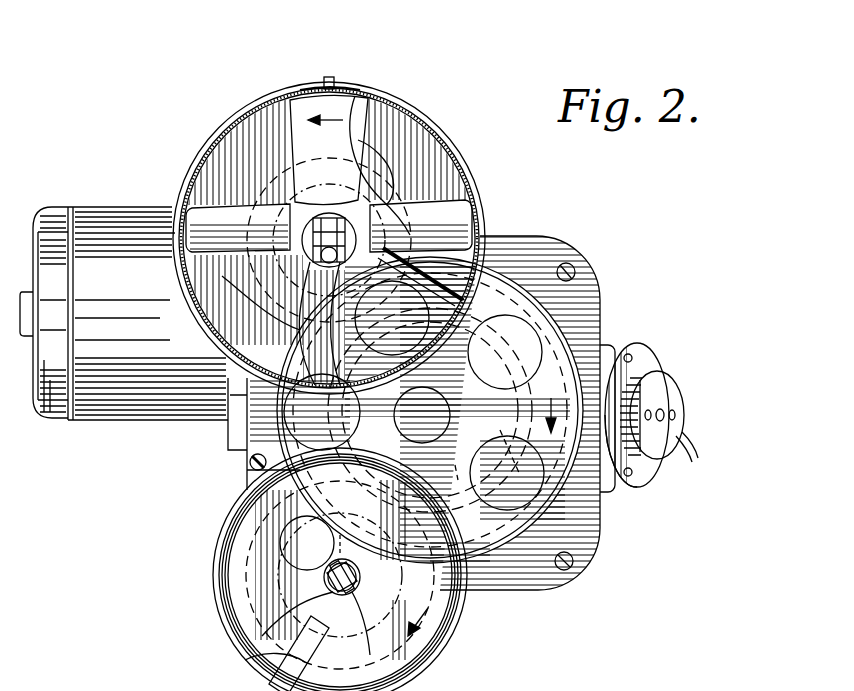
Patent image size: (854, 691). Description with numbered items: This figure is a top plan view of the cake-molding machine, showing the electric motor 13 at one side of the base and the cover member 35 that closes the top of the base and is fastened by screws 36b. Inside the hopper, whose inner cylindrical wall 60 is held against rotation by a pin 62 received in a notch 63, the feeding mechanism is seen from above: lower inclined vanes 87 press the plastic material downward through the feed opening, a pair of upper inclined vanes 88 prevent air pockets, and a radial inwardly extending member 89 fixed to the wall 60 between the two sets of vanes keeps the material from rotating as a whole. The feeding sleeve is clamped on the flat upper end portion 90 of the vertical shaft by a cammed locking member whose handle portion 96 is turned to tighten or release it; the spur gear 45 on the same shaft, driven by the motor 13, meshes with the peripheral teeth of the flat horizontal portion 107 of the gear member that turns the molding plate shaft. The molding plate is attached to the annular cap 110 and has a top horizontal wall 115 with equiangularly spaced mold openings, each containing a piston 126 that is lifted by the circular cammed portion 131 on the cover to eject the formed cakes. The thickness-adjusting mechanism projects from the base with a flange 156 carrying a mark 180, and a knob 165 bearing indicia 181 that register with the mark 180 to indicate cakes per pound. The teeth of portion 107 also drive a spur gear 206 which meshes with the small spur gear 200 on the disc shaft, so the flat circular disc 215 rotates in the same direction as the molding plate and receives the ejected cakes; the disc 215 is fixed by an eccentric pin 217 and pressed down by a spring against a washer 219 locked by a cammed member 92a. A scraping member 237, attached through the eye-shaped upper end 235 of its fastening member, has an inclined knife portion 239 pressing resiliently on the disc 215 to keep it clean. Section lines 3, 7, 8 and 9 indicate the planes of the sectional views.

The section line 3- 3 is at (188, 690).
The section line 7- 7 is at (272, 21).
The section line 8- 8 is at (520, 330).
The section line 9- 9 is at (367, 427).
The electric motor 13 is at (127, 196).
The cover member 35 is at (600, 548).
The screws 36b is at (574, 265).
The spur gear 45 is at (290, 192).
The inner cylindrical wall 60 is at (470, 170).
The pin 62 is at (336, 80).
The notch 63 is at (378, 86).
The inclined vanes 87 is at (385, 200).
The inclined vanes 88 is at (365, 108).
The radial inwardly extending member 89 is at (470, 262).
The flat upper end portion 90 is at (327, 218).
The handle portion 96 is at (305, 272).
The flat horizontal portion 107 is at (607, 347).
The annular cap 110 is at (440, 413).
The top horizontal wall 115 is at (545, 578).
The piston 126 is at (440, 270).
The circular cammed portion 131 is at (478, 455).
The flange 156 is at (650, 472).
The handle, knob, or dial portion 165 is at (661, 402).
The mark 180 is at (648, 395).
The indicia 181 is at (680, 455).
The small spur gear 200 is at (340, 535).
The spur gear 206 is at (283, 538).
The disc 215 is at (222, 566).
The eccentric pin 217 is at (300, 612).
The washer 219 is at (352, 585).
The upper end 235 is at (467, 608).
The scraping member 237 is at (324, 654).
The knife portion 239 is at (260, 658).
The member 92a is at (462, 672).